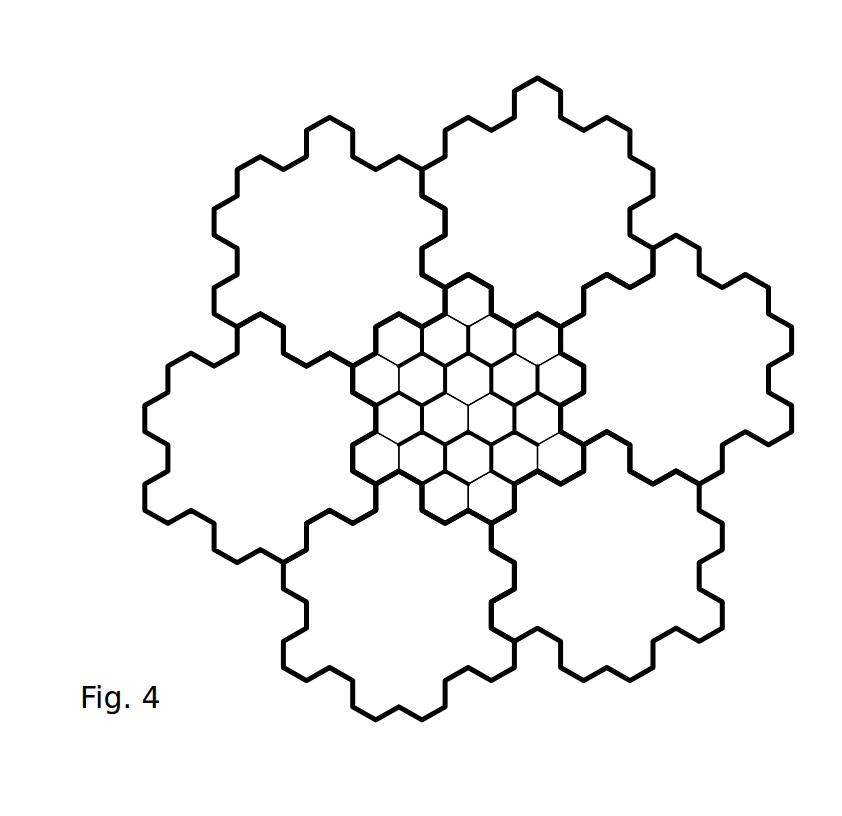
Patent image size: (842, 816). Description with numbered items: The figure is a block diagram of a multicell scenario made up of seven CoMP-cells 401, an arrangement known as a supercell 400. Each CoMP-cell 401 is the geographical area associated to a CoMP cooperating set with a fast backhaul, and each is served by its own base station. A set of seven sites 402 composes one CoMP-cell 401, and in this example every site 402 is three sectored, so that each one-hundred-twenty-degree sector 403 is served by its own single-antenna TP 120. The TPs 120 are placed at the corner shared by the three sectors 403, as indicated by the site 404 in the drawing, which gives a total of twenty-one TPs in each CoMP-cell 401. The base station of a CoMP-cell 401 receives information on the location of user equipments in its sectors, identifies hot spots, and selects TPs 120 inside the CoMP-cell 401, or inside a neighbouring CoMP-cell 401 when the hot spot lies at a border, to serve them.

The supercell 400 is at (759, 107).
The CoMP-cell 401 is at (263, 177).
The site 402 is at (388, 344).
The sector 403 is at (576, 386).
The site 404 is at (445, 438).
The TP 120 is at (476, 394).